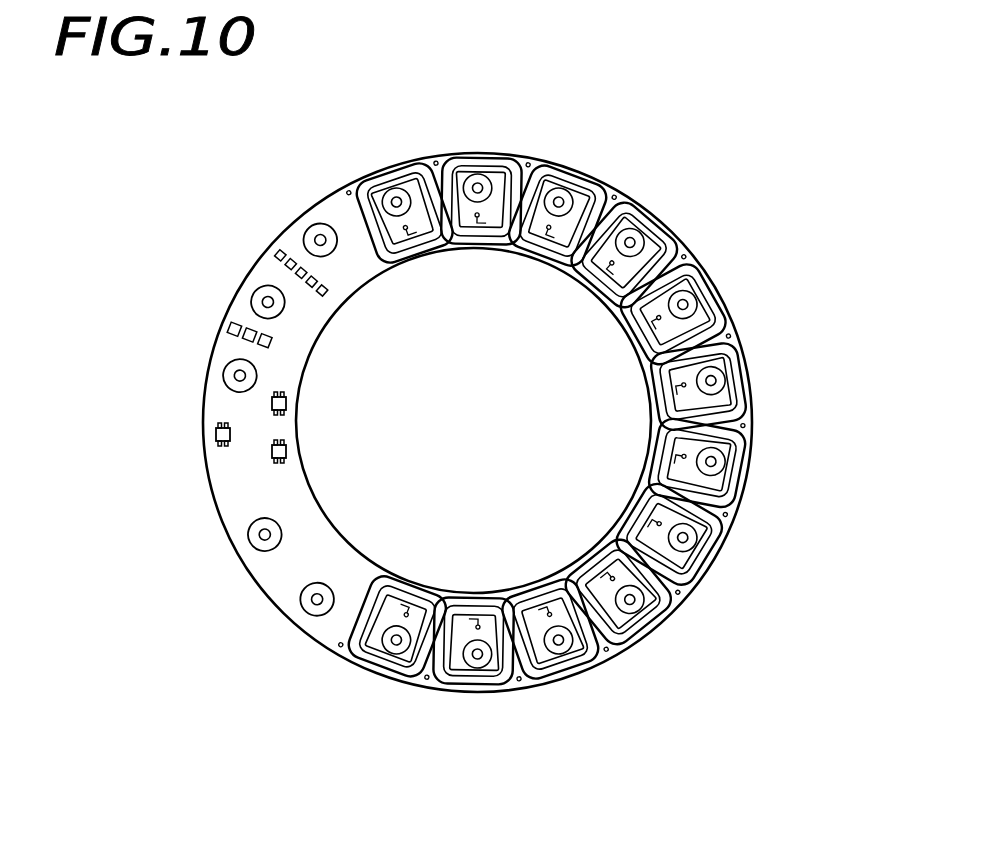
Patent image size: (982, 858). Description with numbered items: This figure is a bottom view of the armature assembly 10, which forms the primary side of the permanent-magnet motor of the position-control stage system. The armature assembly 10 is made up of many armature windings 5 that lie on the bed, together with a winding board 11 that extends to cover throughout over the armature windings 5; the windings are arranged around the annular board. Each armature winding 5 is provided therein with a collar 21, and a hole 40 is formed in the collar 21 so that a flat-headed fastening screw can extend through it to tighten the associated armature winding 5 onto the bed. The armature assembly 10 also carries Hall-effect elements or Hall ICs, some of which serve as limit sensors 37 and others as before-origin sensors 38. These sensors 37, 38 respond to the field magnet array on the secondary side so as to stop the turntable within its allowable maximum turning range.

The armature assembly 10 is at (614, 187).
The winding board 11 is at (341, 220).
The armature winding 5 is at (688, 278).
The collar 21 is at (694, 306).
The hole 40 is at (724, 377).
The limit sensor 37 is at (216, 433).
The before-origin sensor 38 is at (272, 455).